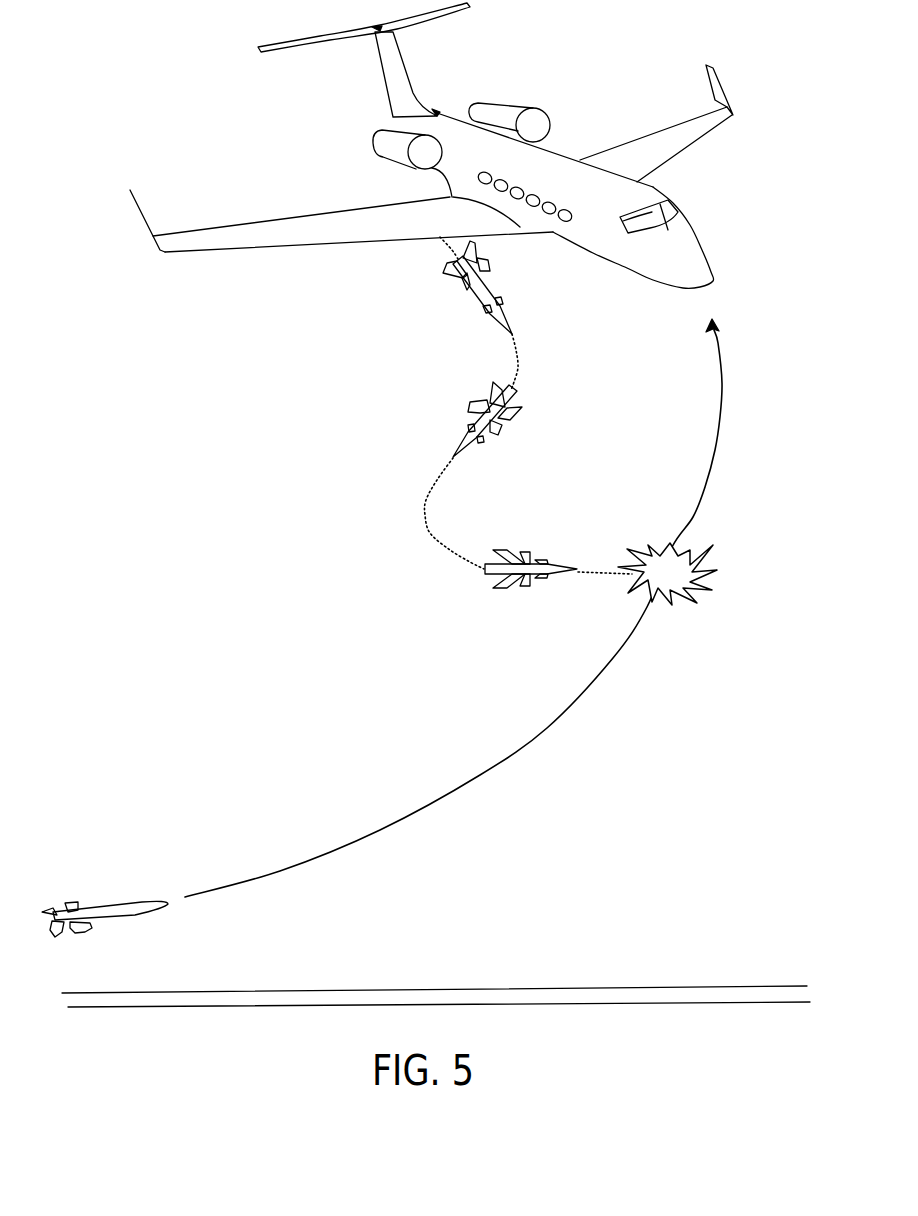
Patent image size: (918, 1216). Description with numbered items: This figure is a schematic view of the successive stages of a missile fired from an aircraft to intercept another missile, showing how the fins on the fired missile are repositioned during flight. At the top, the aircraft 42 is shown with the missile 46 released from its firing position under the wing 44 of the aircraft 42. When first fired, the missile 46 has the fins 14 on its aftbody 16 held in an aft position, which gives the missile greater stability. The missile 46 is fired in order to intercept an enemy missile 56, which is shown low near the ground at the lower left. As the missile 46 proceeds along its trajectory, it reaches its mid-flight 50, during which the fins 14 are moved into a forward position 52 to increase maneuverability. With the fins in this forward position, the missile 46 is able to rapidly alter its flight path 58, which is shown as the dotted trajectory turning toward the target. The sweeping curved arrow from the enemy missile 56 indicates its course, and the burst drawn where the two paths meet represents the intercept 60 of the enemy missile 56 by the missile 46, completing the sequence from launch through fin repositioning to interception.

The fins 14 is at (488, 349).
The aftbody 16 is at (452, 262).
The aircraft 42 is at (431, 146).
The wing 44 is at (352, 230).
The missile 46 is at (484, 308).
The mid-flight 50 is at (515, 387).
The forward position 52 is at (472, 427).
The enemy missile 56 is at (135, 920).
The flight path 58 is at (520, 593).
The intercept 60 is at (693, 595).